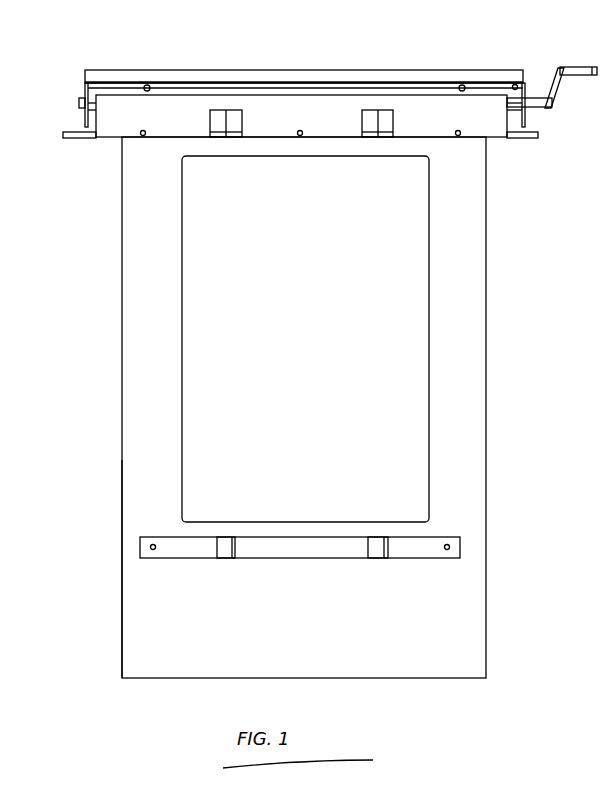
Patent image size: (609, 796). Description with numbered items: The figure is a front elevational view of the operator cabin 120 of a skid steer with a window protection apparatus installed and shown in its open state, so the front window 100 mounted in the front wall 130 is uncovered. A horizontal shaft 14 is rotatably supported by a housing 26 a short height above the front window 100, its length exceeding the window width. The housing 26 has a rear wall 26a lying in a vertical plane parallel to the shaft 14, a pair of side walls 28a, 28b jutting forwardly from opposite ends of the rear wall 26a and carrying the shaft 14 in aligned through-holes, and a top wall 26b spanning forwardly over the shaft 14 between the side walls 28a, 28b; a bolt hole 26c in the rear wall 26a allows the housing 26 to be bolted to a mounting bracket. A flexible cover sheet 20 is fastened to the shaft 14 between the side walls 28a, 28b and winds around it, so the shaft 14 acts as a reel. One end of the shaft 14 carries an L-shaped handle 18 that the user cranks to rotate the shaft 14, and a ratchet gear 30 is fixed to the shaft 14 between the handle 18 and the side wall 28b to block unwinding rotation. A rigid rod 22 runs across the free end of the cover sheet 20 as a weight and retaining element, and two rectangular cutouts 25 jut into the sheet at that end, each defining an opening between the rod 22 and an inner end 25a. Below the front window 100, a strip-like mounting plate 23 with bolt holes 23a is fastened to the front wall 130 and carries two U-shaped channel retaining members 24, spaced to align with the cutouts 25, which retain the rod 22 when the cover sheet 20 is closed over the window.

The horizontal shaft 14 is at (512, 112).
The L-shaped handle 18 is at (591, 63).
The cover sheet 20 is at (172, 138).
The rod 22 is at (78, 139).
The mounting plate 23 is at (178, 553).
The bolt holes 23a is at (154, 551).
The retaining members 24 is at (238, 552).
The rectangular cutouts 25 is at (214, 122).
The inner end of cutout 25a is at (232, 112).
The housing 26 is at (526, 66).
The rear wall 26a is at (100, 88).
The top wall 26b is at (298, 72).
The bolt hole 26c is at (147, 86).
The side wall 28a is at (90, 120).
The side wall 28b is at (530, 118).
The ratchet gear 30 is at (530, 96).
The front window 100 is at (405, 382).
The operator cabin 120 is at (476, 277).
The front wall 130 is at (472, 460).